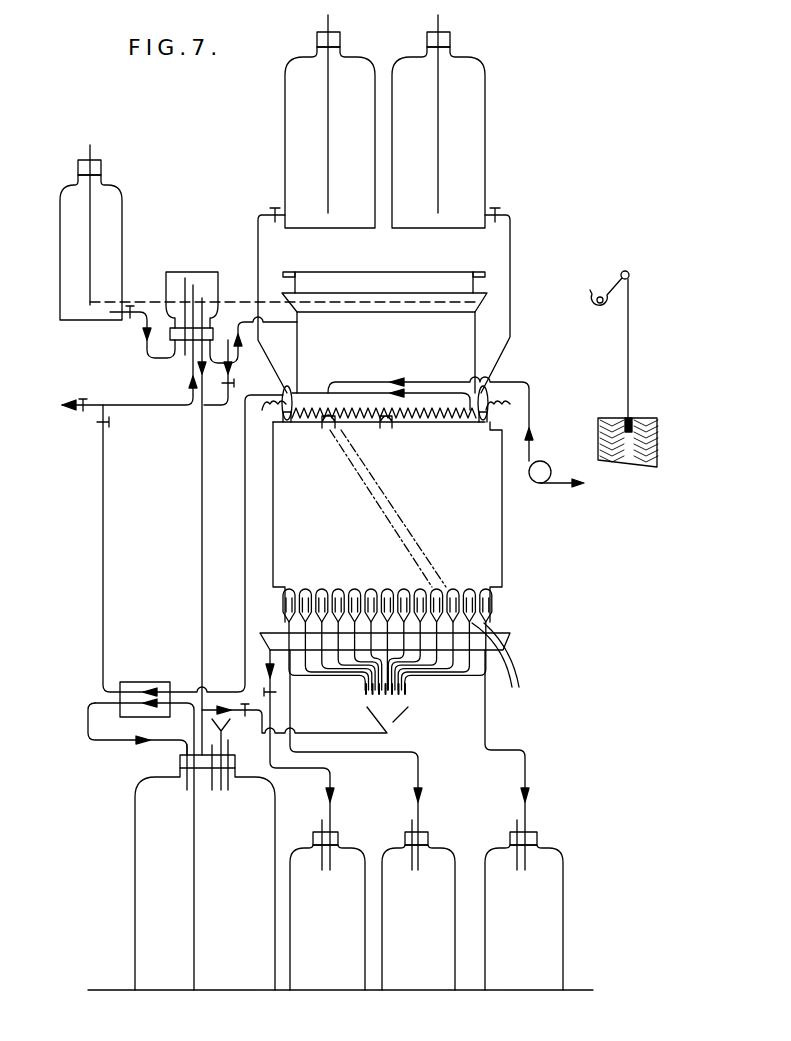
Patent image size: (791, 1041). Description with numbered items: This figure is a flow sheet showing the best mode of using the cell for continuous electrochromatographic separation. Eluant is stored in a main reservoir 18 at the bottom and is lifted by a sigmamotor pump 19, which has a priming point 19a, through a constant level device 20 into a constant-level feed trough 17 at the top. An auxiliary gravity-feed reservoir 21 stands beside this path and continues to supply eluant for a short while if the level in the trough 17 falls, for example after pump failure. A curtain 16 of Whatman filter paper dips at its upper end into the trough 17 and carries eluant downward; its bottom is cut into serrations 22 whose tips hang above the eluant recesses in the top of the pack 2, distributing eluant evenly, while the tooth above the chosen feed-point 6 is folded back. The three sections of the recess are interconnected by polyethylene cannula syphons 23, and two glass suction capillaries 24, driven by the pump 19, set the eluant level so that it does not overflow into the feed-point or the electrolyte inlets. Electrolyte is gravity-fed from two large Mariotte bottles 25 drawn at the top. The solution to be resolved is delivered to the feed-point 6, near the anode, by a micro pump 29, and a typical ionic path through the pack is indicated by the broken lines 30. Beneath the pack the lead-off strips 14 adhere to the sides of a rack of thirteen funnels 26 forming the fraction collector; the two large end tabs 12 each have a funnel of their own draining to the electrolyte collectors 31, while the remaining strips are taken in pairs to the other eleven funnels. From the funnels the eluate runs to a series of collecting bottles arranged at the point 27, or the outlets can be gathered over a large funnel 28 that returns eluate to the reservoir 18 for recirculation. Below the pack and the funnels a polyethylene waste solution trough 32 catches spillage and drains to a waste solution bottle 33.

The pack 2 is at (490, 530).
The feed-point 6 is at (327, 430).
The end tabs 12 is at (286, 602).
The lead-off strips 14 is at (477, 612).
The curtain 16 is at (628, 350).
The feed trough 17 is at (587, 303).
The reservoir 18 is at (234, 960).
The pump 19 is at (142, 682).
The priming point 19a is at (53, 405).
The constant level device 20 is at (194, 268).
The auxiliary gravity-feed reservoir 21 is at (122, 190).
The serrations 22 is at (420, 430).
The cannula syphons 23 is at (385, 430).
The suction capillaries 24 is at (305, 422).
The Mariotte bottles 25 is at (408, 52).
The funnels 26 is at (501, 667).
The collecting bottles point 27 is at (406, 690).
The large funnel 28 is at (400, 722).
The micro pump 29 is at (541, 464).
The ionic path 30 is at (430, 523).
The electrolyte collectors 31 is at (508, 952).
The waste solution trough 32 is at (513, 636).
The waste solution bottle 33 is at (342, 955).